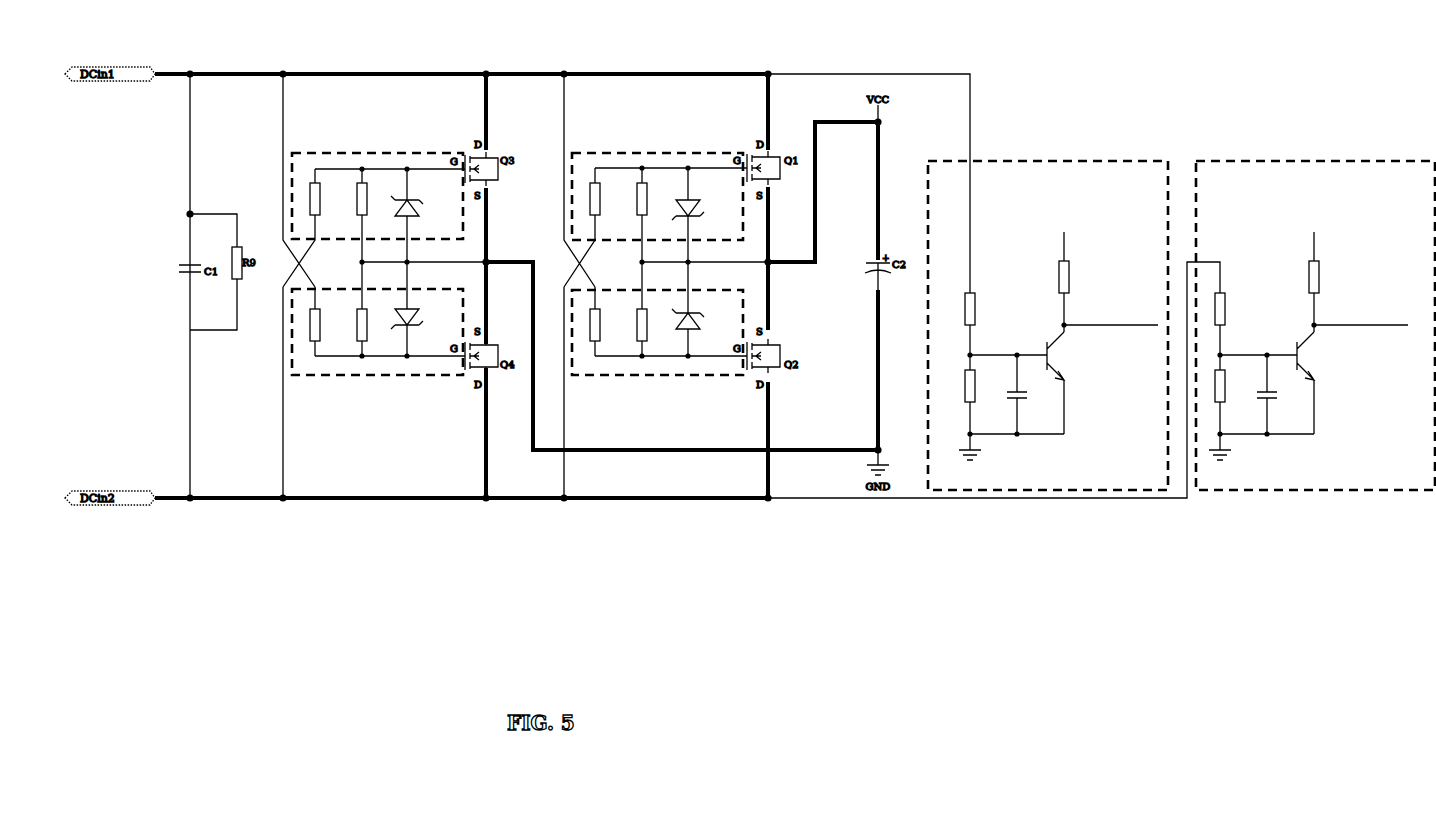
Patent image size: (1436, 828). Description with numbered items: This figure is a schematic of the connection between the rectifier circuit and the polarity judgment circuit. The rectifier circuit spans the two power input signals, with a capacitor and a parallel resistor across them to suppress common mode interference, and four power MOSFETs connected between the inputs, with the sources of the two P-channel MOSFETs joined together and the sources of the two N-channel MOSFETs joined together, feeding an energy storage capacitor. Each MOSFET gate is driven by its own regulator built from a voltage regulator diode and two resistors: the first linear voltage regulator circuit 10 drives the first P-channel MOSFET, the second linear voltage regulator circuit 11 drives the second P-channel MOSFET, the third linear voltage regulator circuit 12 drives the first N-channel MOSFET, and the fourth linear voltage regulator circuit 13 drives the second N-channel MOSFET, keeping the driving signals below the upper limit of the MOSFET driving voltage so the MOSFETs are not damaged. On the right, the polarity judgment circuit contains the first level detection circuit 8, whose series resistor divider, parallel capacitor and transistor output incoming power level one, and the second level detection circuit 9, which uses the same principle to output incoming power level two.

The first level detection circuit 8 is at (1093, 180).
The second level detection circuit 9 is at (1388, 180).
The first linear voltage regulator circuit 10 is at (665, 160).
The second linear voltage regulator circuit 11 is at (665, 365).
The third linear voltage regulator circuit 12 is at (387, 160).
The fourth linear voltage regulator circuit 13 is at (375, 362).